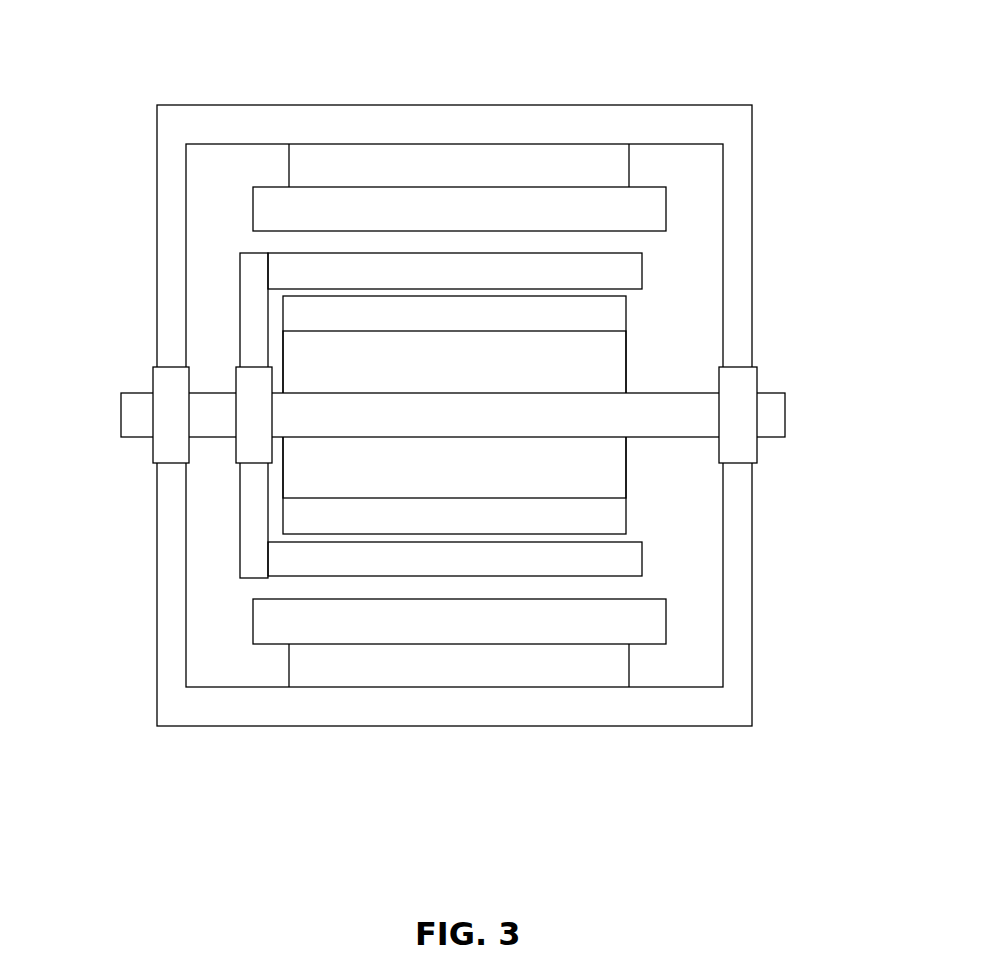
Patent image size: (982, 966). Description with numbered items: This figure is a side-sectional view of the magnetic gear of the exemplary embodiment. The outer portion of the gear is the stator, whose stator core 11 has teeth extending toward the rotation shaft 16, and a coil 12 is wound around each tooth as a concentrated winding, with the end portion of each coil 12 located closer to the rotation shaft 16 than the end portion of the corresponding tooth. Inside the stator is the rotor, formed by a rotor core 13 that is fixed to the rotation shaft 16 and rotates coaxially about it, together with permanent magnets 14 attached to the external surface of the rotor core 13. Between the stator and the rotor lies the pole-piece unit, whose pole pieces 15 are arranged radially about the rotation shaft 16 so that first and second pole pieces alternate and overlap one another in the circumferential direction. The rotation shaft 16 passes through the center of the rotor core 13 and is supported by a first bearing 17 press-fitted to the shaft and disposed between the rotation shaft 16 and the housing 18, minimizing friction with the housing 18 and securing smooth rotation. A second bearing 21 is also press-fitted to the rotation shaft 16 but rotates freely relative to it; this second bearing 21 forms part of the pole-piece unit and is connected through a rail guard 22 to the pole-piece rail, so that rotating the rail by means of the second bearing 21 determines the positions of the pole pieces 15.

The stator core 11 is at (487, 163).
The coil 12 is at (586, 205).
The rotor core 13 is at (308, 483).
The permanent magnet 14 is at (295, 316).
The pole piece 15 is at (620, 272).
The rotation shaft 16 is at (770, 413).
The first bearing 17 is at (165, 380).
The housing 18 is at (594, 711).
The second bearing 21 is at (254, 452).
The rail guard 22 is at (248, 562).